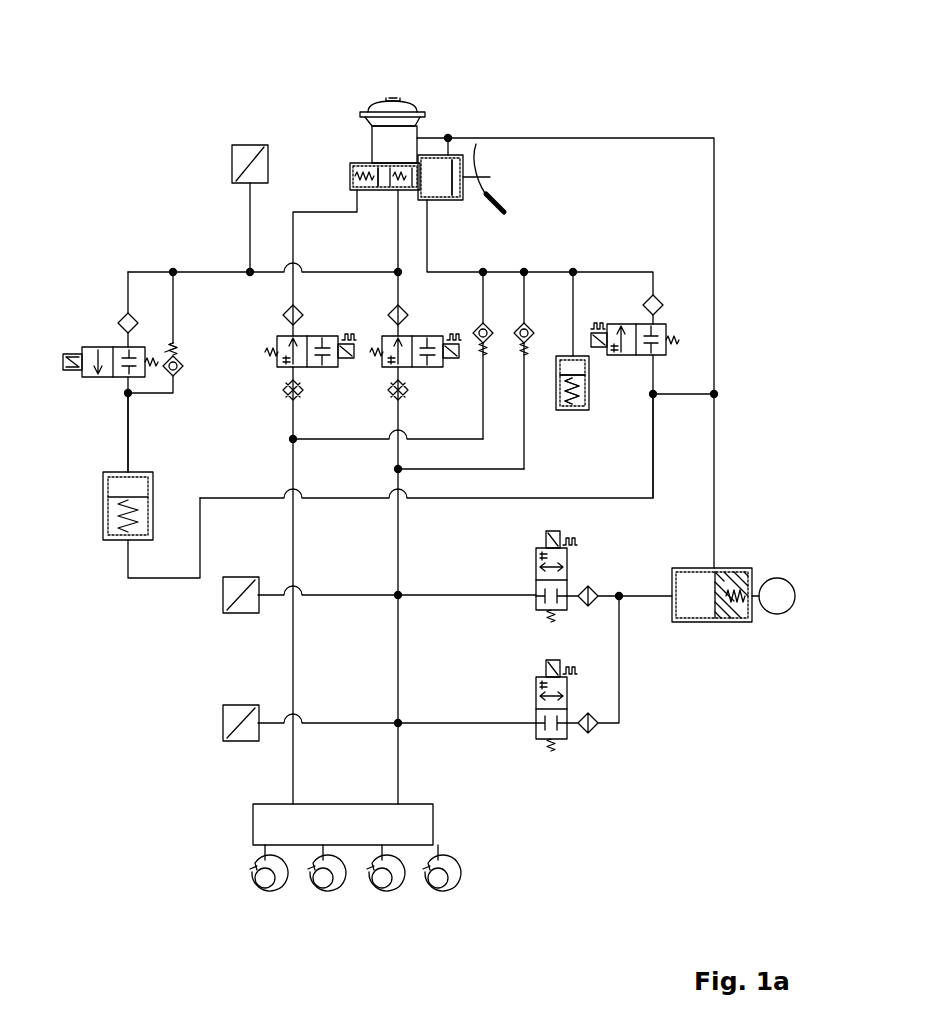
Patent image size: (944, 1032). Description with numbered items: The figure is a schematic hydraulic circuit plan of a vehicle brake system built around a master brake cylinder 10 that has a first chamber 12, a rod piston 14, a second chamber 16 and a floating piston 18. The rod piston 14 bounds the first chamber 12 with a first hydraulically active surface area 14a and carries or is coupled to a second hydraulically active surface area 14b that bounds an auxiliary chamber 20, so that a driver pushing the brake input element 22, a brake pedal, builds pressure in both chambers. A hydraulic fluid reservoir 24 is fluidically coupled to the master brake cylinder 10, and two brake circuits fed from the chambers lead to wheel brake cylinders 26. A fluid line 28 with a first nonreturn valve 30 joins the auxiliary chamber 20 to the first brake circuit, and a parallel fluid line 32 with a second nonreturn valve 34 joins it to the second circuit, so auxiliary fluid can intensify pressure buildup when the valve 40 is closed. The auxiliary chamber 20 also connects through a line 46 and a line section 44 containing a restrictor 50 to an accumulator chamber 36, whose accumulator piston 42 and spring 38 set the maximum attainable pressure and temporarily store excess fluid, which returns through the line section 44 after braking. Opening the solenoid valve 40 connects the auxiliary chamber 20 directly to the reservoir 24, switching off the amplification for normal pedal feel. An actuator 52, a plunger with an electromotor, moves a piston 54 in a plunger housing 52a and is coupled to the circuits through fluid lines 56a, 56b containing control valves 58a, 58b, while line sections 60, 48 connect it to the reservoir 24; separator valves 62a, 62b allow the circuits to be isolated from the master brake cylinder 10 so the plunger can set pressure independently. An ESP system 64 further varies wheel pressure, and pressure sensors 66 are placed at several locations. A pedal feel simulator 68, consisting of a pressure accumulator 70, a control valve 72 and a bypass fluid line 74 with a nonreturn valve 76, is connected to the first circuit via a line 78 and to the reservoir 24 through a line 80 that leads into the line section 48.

The master brake cylinder 10 is at (349, 142).
The first chamber 12 is at (407, 163).
The rod piston 14 is at (440, 195).
The first hydraulically active surface area 14a is at (406, 165).
The second hydraulically active surface area 14b is at (437, 158).
The second chamber 16 is at (350, 180).
The floating piston 18 is at (380, 190).
The auxiliary chamber 20 is at (428, 168).
The brake input element 22 is at (495, 180).
The hydraulic fluid reservoir 24 is at (386, 98).
The wheel brake cylinders 26 is at (266, 896).
The fluid line 28 is at (527, 450).
The first nonreturn valve 30 is at (522, 325).
The parallel fluid line 32 is at (438, 437).
The second nonreturn valve 34 is at (480, 325).
The accumulator chamber 36 is at (590, 381).
The accumulator chamber spring 38 is at (590, 411).
The valve 40 is at (660, 324).
The accumulator piston 42 is at (570, 356).
The line section 44 is at (578, 283).
The line 46 is at (613, 270).
The line section 48 is at (718, 270).
The restrictor 50 is at (566, 312).
The actuator 52 is at (671, 648).
The plunger housing 52a is at (698, 625).
The piston 54 is at (736, 568).
The fluid line 56a is at (450, 593).
The fluid line 56b is at (467, 725).
The control valve 58a is at (567, 571).
The control valve 58b is at (536, 701).
The line section 60 is at (714, 462).
The separator valve 62a is at (425, 336).
The separator valve 62b is at (318, 336).
The ESP system 64 is at (433, 823).
The pressure sensor 66 is at (250, 145).
The pedal feel simulator 68 is at (86, 547).
The pressure accumulator 70 is at (103, 502).
The control valve 72 is at (88, 346).
The bypass fluid line 74 is at (155, 395).
The nonreturn valve 76 is at (180, 352).
The line 78 is at (331, 268).
The line 80 is at (348, 500).